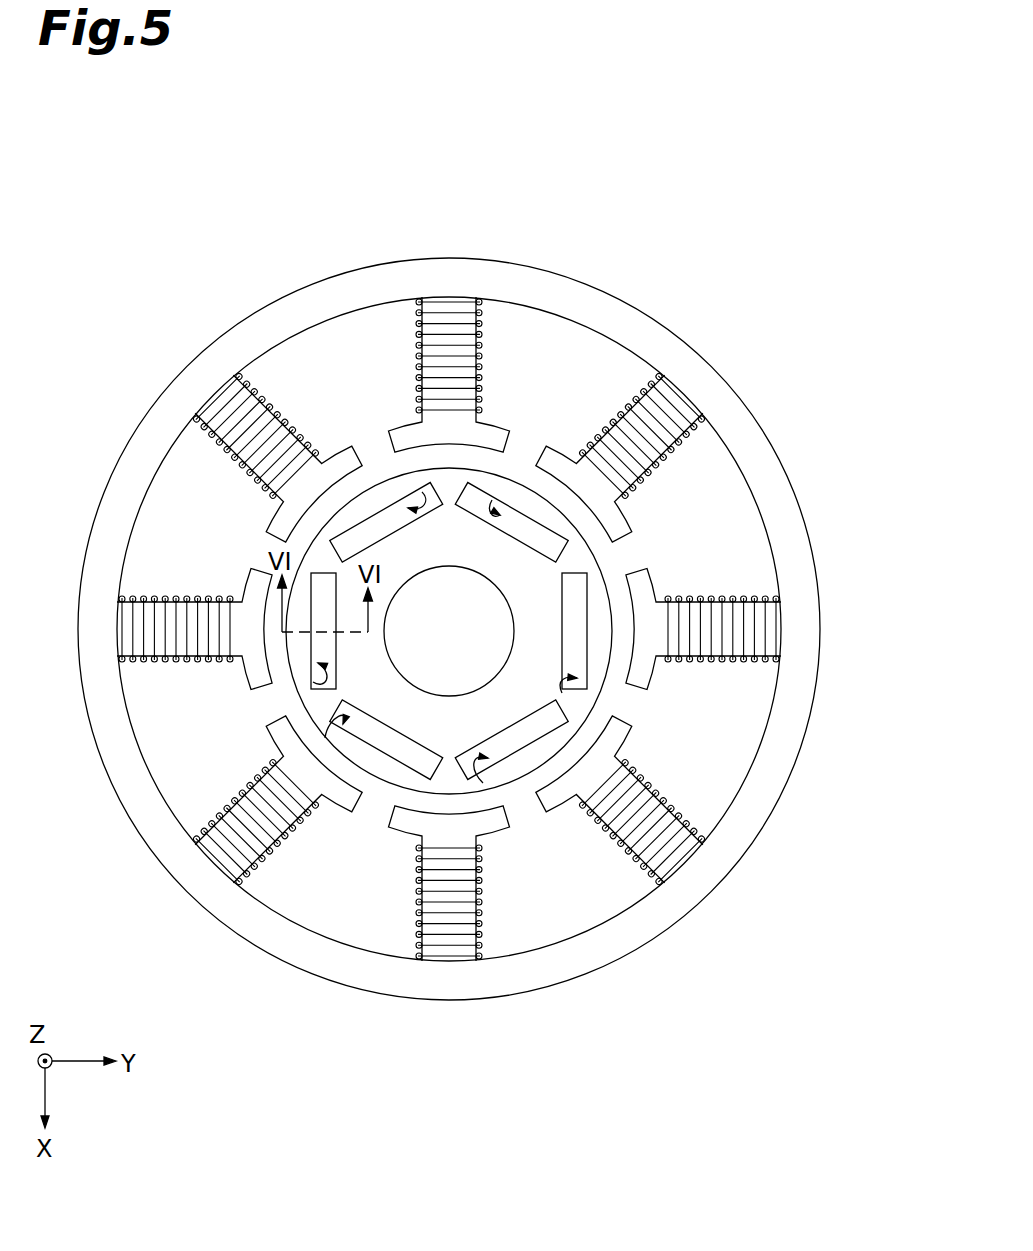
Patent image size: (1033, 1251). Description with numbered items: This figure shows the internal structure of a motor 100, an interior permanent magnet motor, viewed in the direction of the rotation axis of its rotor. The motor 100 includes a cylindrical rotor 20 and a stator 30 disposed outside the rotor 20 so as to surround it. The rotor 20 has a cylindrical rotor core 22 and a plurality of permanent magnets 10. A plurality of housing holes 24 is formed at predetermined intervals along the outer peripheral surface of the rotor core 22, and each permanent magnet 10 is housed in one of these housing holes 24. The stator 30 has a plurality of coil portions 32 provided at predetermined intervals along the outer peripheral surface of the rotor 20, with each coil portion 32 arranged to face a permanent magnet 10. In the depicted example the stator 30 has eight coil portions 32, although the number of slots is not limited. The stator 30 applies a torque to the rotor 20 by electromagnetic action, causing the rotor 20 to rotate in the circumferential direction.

The motor 100 is at (640, 200).
The stator 30 is at (753, 412).
The coil portion 32 is at (457, 302).
The rotor 20 is at (588, 1048).
The rotor core 22 is at (447, 792).
The permanent magnet 10 is at (388, 512).
The housing hole 24 is at (422, 492).